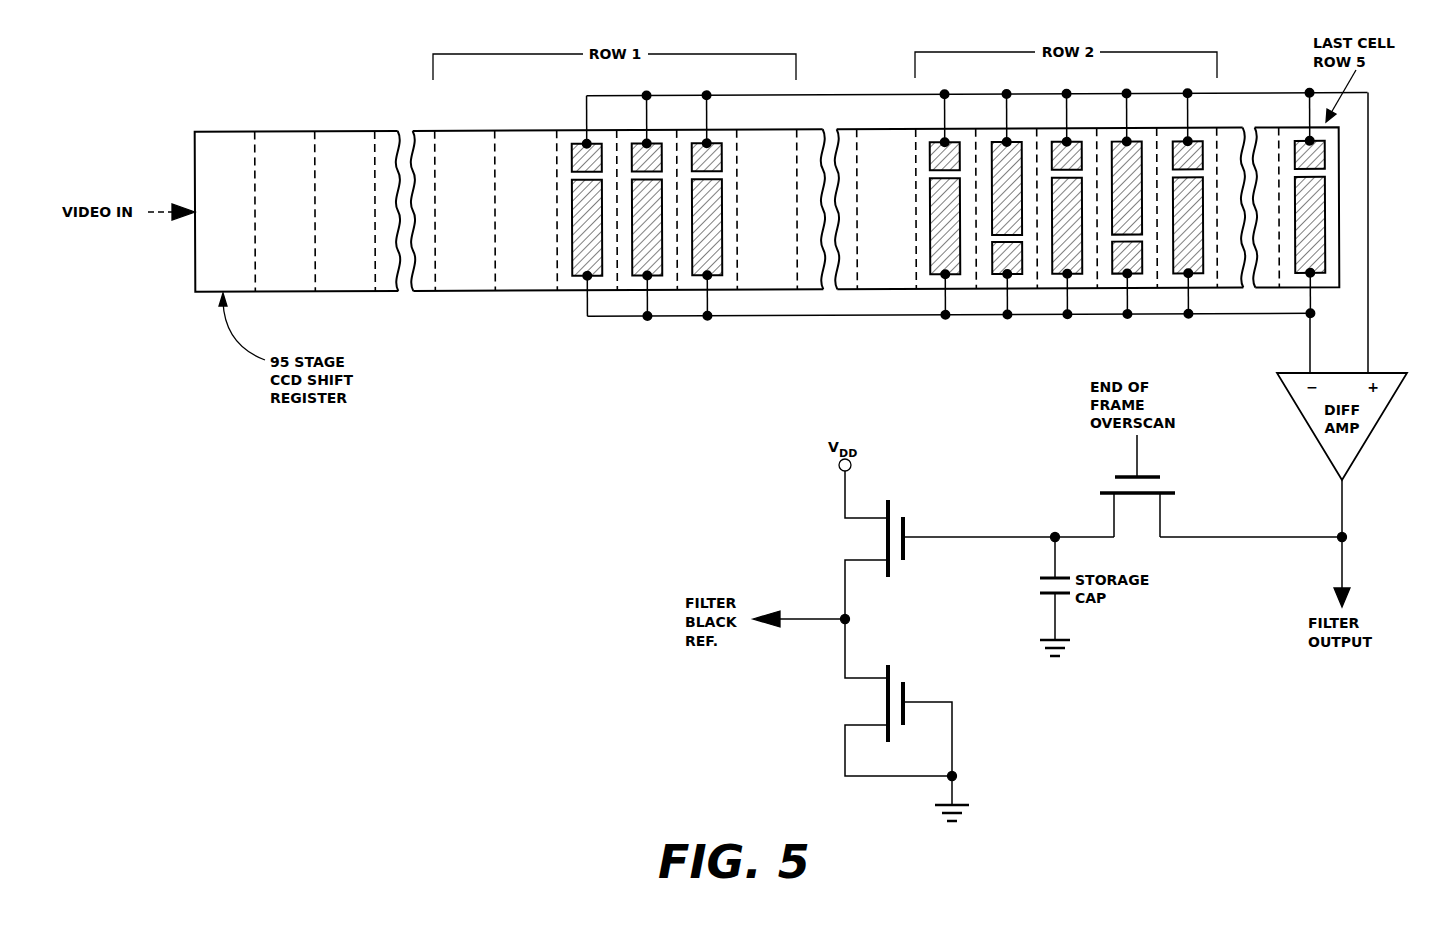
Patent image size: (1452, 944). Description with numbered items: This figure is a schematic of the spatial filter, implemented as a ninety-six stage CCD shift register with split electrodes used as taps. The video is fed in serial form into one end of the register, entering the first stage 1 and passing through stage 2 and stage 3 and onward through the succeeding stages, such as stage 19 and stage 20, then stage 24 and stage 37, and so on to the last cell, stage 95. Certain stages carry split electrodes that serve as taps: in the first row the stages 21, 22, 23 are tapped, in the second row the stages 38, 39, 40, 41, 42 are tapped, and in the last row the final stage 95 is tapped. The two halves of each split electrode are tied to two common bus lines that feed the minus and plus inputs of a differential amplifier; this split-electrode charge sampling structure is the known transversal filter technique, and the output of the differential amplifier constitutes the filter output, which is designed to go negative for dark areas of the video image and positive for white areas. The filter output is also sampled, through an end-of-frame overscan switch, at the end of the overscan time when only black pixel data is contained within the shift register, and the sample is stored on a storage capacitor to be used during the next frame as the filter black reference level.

The shift register stage 1 is at (237, 212).
The shift register stage 2 is at (298, 211).
The shift register stage 3 is at (358, 211).
The shift register stage 19 is at (465, 211).
The shift register stage 20 is at (537, 210).
The split-electrode tap stage 21 is at (587, 206).
The split-electrode tap stage 22 is at (647, 205).
The split-electrode tap stage 23 is at (707, 205).
The shift register stage 24 is at (777, 209).
The shift register stage 37 is at (887, 209).
The split-electrode tap stage 38 is at (945, 204).
The split-electrode tap stage 39 is at (1007, 204).
The split-electrode tap stage 40 is at (1067, 204).
The split-electrode tap stage 41 is at (1127, 204).
The split-electrode tap stage 42 is at (1188, 203).
The last cell split-electrode tap stage 95 is at (1310, 203).